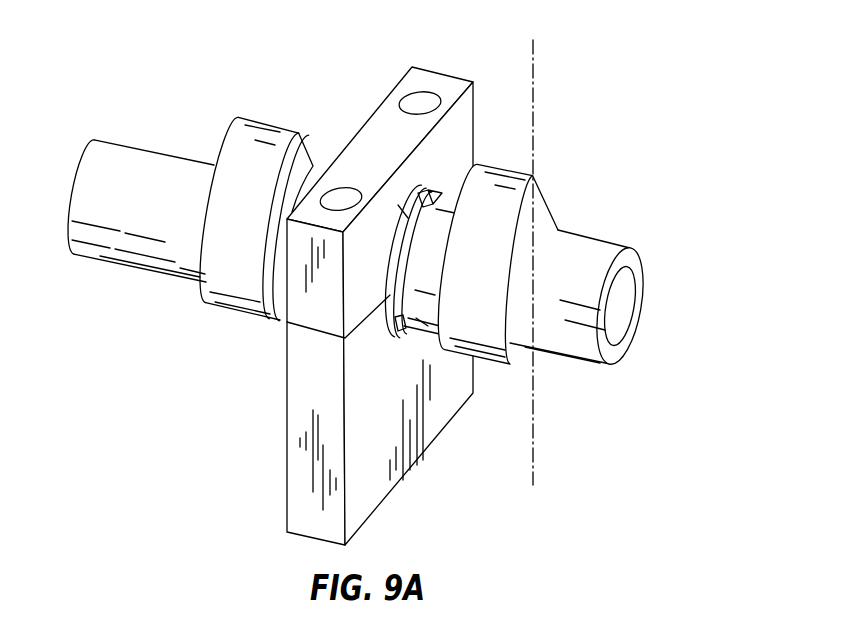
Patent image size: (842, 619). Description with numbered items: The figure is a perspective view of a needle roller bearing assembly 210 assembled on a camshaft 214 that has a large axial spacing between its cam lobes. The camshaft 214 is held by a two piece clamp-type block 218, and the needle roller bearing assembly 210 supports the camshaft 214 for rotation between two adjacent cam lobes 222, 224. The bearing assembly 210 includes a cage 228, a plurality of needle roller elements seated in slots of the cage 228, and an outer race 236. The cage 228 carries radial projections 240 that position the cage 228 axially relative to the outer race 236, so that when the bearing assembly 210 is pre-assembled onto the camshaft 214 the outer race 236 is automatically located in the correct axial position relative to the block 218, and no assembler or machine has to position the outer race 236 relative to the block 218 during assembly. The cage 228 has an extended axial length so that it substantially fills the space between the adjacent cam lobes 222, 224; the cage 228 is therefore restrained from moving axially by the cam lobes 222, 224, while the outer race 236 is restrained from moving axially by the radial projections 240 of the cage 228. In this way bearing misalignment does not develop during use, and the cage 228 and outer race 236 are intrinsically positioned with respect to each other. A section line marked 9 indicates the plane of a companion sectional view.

The needle roller bearing assembly 210 is at (420, 253).
The camshaft 214 is at (101, 124).
The two piece clamp-type block 218 is at (307, 481).
The cam lobe 222 is at (235, 137).
The cam lobe 224 is at (541, 191).
The cage 228 is at (422, 322).
The outer race 236 is at (403, 213).
The radial projections 240 is at (433, 190).
The section line 9- 9 is at (531, 62).